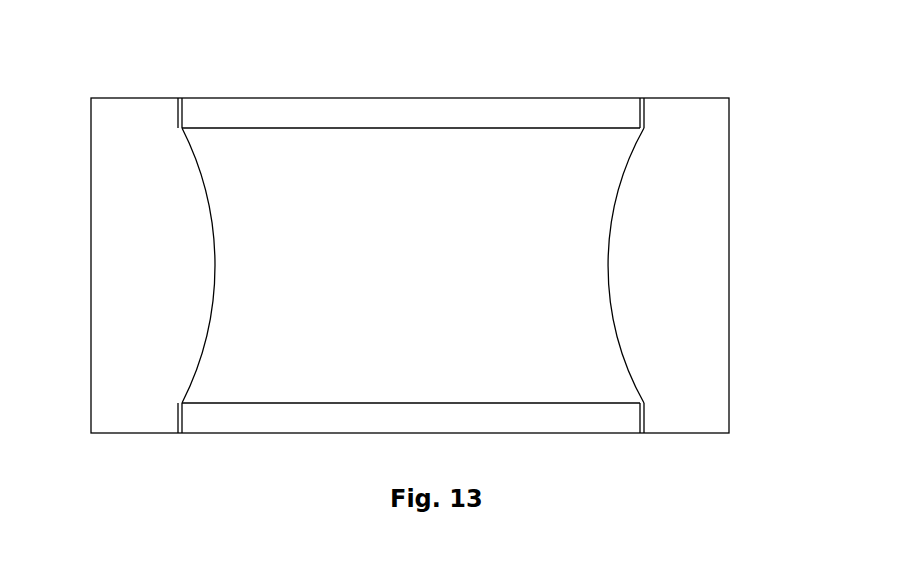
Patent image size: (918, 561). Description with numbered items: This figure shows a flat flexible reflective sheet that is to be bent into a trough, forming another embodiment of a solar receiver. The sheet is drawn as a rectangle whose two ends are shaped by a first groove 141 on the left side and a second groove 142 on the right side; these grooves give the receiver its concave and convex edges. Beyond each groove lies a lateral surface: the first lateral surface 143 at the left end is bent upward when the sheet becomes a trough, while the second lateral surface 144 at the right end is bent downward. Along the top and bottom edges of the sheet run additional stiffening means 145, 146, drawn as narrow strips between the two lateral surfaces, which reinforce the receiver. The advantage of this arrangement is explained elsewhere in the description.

The first groove 141 is at (214, 234).
The second groove 142 is at (677, 234).
The first lateral surface 143 is at (155, 292).
The second lateral surface 144 is at (698, 322).
The stiffening means 145 is at (476, 115).
The stiffening means 146 is at (550, 420).